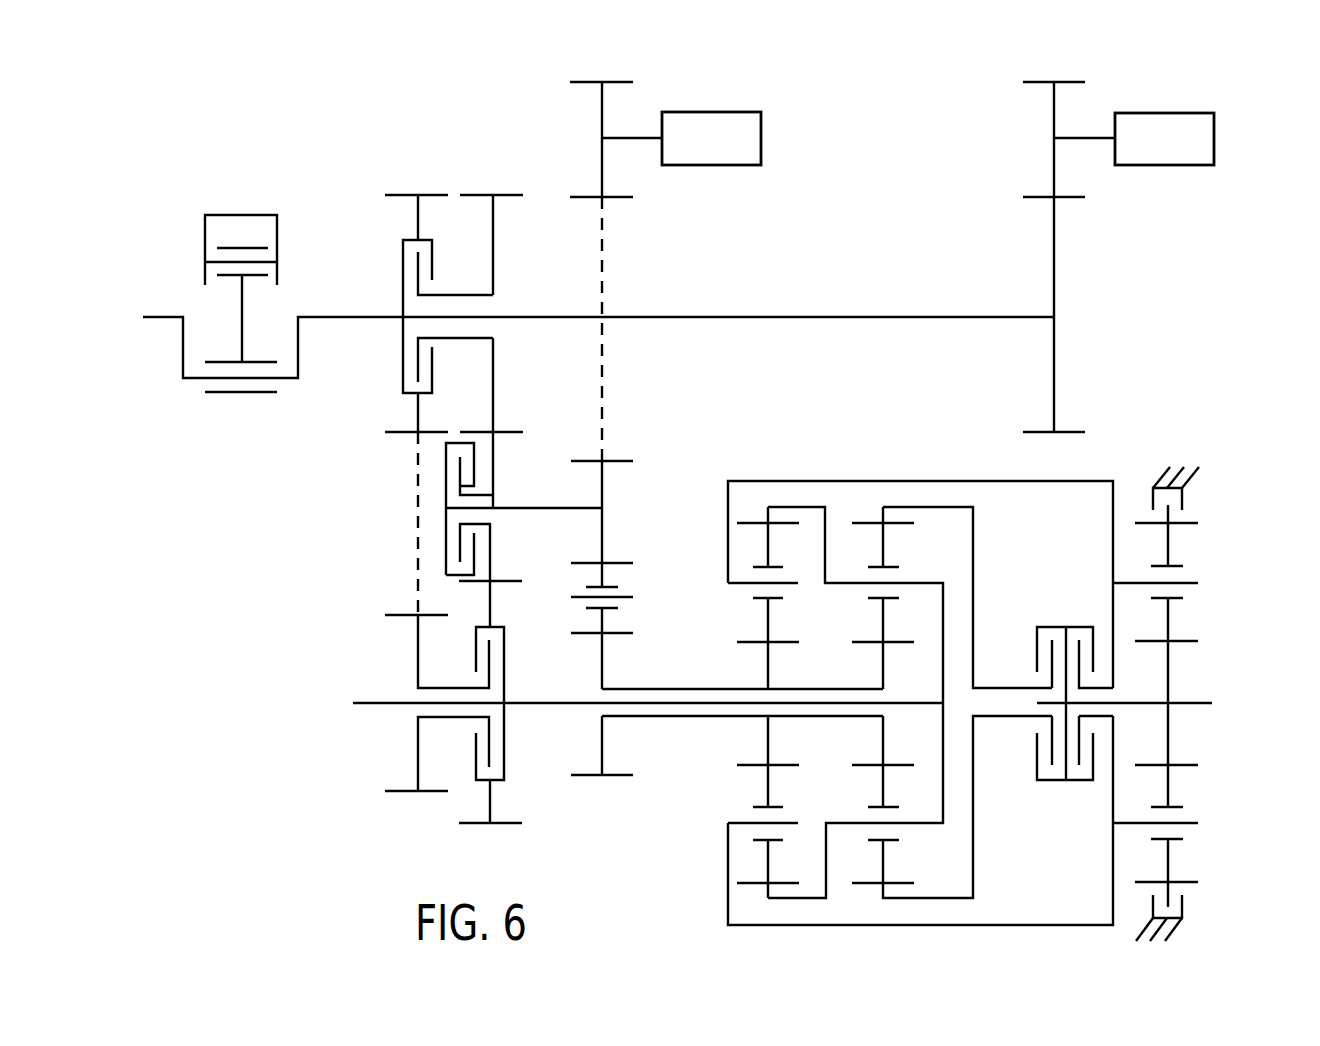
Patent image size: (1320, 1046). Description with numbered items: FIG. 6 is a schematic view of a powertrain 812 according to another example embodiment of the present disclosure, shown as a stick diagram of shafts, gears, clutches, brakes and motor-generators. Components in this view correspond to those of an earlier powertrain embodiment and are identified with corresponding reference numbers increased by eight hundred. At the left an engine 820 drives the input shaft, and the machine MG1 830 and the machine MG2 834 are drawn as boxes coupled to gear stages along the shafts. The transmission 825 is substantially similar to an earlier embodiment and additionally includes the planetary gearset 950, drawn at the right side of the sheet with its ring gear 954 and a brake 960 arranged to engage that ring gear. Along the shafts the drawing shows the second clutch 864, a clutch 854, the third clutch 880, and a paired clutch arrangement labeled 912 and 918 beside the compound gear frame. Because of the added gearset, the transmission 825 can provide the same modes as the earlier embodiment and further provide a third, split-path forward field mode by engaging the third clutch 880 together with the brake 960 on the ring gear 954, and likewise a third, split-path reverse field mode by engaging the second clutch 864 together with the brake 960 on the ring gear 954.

The powertrain 812 is at (311, 146).
The engine 820 is at (186, 240).
The second clutch 864 is at (389, 280).
The clutch 854 is at (459, 423).
The third clutch 880 is at (516, 626).
The transmission 825 is at (373, 841).
The second motor generator MG2 834 is at (712, 111).
The first motor generator MG1 830 is at (1165, 112).
The clutch 912 is at (1077, 614).
The clutch 918 is at (1053, 614).
The planetary gearset 950 is at (1207, 560).
The ring gear 954 is at (1170, 519).
The brake 960 is at (1183, 908).